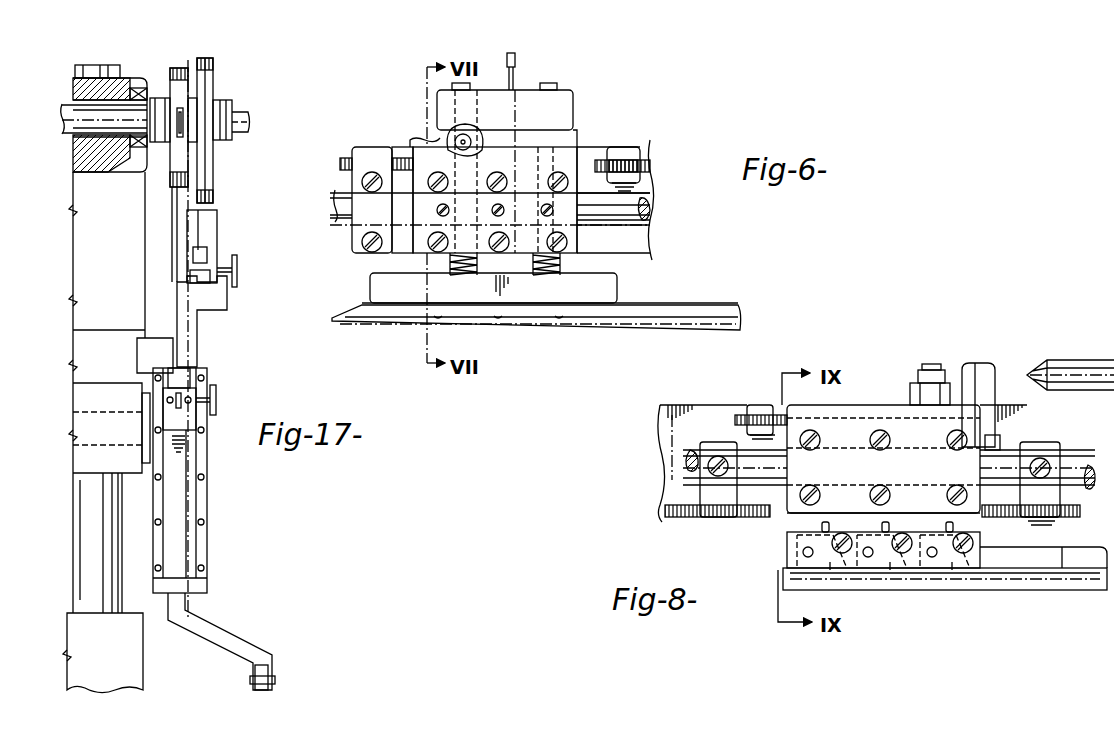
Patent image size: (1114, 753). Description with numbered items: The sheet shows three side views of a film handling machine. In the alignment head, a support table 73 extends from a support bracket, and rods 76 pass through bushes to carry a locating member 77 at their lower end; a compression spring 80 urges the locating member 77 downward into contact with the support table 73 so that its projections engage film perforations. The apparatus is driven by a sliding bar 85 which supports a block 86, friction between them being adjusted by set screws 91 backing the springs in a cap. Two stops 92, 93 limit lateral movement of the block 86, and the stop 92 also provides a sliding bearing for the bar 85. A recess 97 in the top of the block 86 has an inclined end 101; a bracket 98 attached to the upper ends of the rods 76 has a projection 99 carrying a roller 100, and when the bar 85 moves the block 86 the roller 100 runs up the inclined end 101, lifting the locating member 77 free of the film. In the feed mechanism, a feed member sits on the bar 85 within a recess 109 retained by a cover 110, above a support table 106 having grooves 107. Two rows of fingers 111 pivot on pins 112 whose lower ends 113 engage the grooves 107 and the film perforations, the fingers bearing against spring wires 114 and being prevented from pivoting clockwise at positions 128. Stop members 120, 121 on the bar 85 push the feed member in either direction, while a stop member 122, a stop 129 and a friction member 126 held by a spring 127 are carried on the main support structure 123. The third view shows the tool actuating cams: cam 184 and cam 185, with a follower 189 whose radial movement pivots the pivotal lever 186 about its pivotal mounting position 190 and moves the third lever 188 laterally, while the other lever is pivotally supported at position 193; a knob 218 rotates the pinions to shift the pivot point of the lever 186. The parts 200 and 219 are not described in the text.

In FIG. 17, the cam 184 is at (180, 66).
In FIG. 17, the follower 189 is at (177, 107).
In FIG. 17, the pivotal lever 186 is at (183, 158).
In FIG. 17, the cam 185 is at (205, 188).
In FIG. 17, the pivotal support position 193 is at (220, 223).
In FIG. 17, the knob 219 is at (238, 268).
In FIG. 17, the bracket 200 is at (222, 303).
In FIG. 17, the knob 218 is at (217, 390).
In FIG. 17, the pivotal mounting position 190 is at (187, 423).
In FIG. 17, the third lever 188 is at (275, 678).
In FIG. 6, the rods 76 is at (427, 80).
In FIG. 6, the locating member 77 is at (605, 287).
In FIG. 6, the support table 73 is at (742, 322).
In FIG. 6, the compression spring 80 is at (538, 258).
In FIG. 6, the sliding bar 85 is at (648, 207).
In FIG. 8, the sliding bar 85 is at (688, 477).
In FIG. 6, the block 86 is at (575, 140).
In FIG. 6, the set screws 91 is at (492, 208).
In FIG. 6, the stop 92 is at (358, 148).
In FIG. 6, the stop 93 is at (637, 147).
In FIG. 6, the recess 97 is at (535, 140).
In FIG. 6, the bracket 98 is at (522, 95).
In FIG. 6, the projection 99 is at (447, 140).
In FIG. 6, the roller 100 is at (520, 145).
In FIG. 6, the inclined end 101 is at (417, 147).
In FIG. 6, the main support structure 123 is at (667, 150).
In FIG. 8, the main support structure 123 is at (658, 433).
In FIG. 8, the support table 106 is at (1090, 580).
In FIG. 8, the grooves 107 is at (870, 577).
In FIG. 8, the recess 109 is at (982, 568).
In FIG. 8, the cover 110 is at (840, 435).
In FIG. 8, the fingers 111 is at (827, 517).
In FIG. 8, the pins 112 is at (803, 552).
In FIG. 8, the lower ends of pins 113 is at (832, 572).
In FIG. 8, the spring wires 114 is at (813, 523).
In FIG. 8, the stop member 120 is at (700, 528).
In FIG. 8, the stop member 121 is at (1063, 527).
In FIG. 8, the stop member 122 is at (1100, 356).
In FIG. 8, the friction member 126 is at (910, 397).
In FIG. 8, the spring 127 is at (943, 366).
In FIG. 8, the abutment positions 128 is at (977, 527).
In FIG. 8, the stop 129 is at (753, 405).